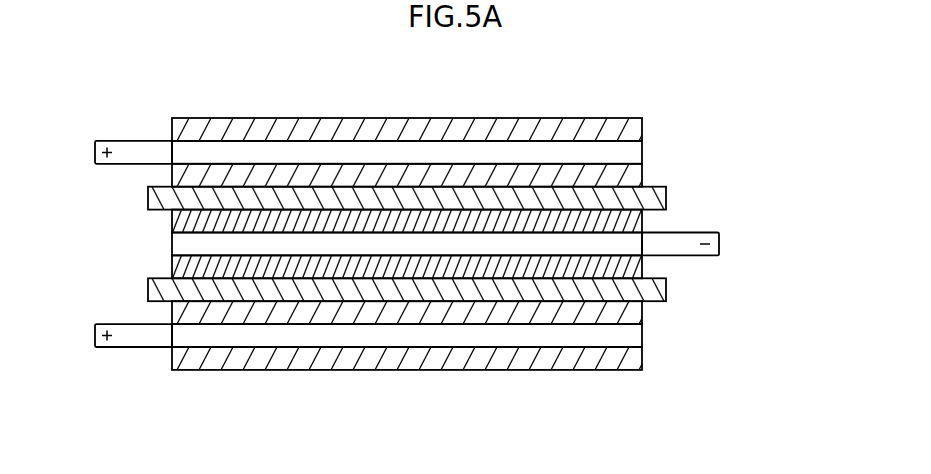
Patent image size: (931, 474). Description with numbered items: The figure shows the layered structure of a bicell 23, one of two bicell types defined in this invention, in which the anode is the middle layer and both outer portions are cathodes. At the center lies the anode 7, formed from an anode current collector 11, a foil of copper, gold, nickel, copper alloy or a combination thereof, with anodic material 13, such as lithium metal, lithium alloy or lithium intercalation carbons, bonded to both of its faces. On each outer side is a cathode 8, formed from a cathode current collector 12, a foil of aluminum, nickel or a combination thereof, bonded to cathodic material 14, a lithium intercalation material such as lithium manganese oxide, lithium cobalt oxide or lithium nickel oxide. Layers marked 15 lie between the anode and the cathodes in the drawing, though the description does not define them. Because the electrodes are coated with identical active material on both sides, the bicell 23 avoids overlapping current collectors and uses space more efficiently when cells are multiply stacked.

The anode 7 is at (495, 248).
The cathode 8 is at (420, 245).
The anode current collector 11 is at (712, 252).
The cathode current collector 12 is at (633, 152).
The anodic material 13 is at (632, 227).
The cathodic material 14 is at (632, 130).
The gasket 15 is at (148, 197).
The bicell 23 is at (456, 245).